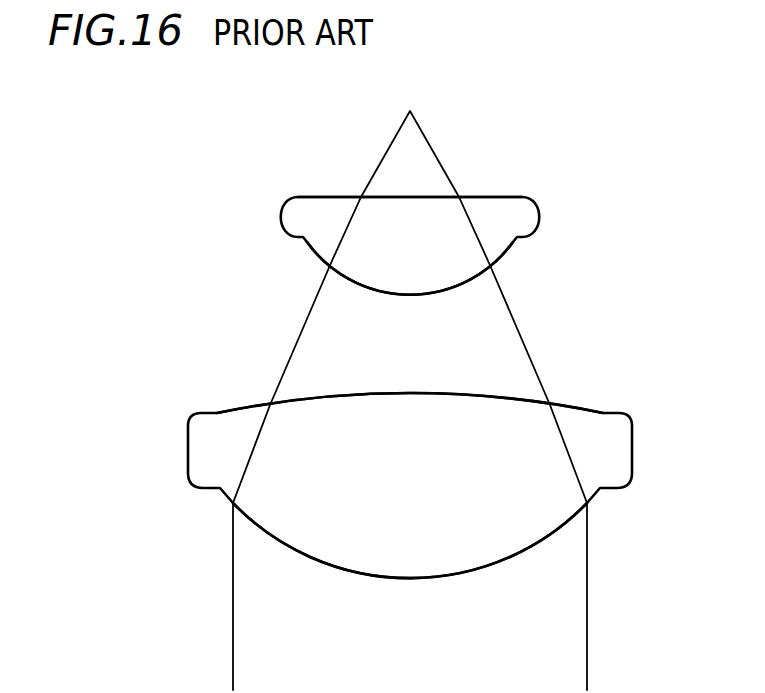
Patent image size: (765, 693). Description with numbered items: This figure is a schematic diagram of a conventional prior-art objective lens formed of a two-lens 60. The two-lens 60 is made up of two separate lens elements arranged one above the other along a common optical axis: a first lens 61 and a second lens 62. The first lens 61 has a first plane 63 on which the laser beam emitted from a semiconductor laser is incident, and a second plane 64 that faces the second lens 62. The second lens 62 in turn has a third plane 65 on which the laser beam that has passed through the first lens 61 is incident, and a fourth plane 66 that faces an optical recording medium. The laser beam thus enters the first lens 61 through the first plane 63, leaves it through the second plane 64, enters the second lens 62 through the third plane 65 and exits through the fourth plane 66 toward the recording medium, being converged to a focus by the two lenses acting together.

The two-lens 60 is at (612, 550).
The first lens 61 is at (634, 448).
The second lens 62 is at (543, 217).
The first plane 63 is at (596, 498).
The second plane 64 is at (582, 410).
The third plane 65 is at (506, 248).
The fourth plane 66 is at (490, 196).